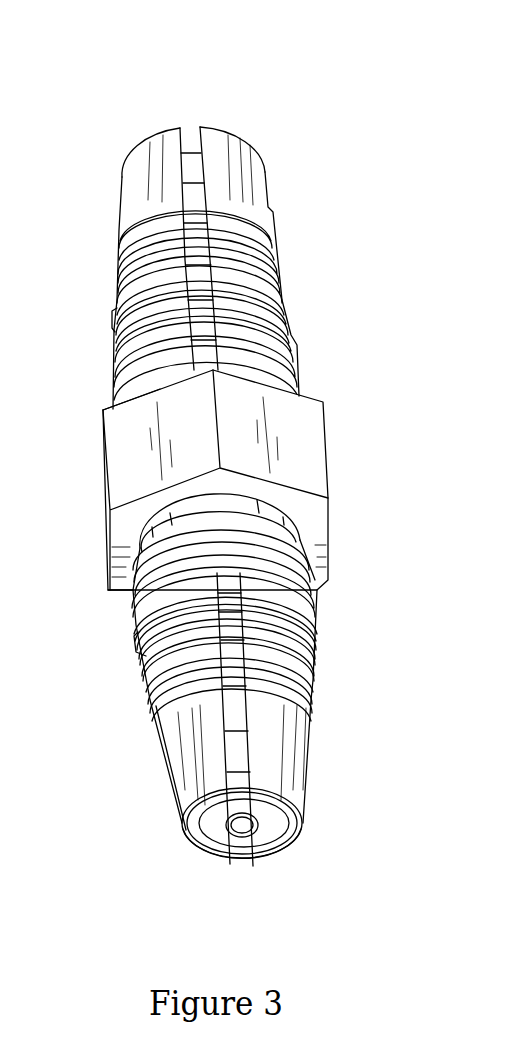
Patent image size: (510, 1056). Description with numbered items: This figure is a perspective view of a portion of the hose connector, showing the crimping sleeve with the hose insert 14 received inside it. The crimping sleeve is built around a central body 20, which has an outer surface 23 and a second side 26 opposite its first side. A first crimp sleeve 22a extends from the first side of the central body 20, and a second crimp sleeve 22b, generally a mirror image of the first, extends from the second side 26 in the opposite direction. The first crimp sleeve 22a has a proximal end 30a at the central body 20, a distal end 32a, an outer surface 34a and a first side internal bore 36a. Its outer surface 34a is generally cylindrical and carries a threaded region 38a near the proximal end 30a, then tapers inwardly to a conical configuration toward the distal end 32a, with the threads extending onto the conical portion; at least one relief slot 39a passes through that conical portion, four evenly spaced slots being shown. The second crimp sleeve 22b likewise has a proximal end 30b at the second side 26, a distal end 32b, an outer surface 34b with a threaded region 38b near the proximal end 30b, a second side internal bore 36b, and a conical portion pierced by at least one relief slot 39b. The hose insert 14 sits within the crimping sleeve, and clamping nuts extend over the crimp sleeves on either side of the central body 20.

The hose insert 14 is at (260, 806).
The central body 20 is at (201, 481).
The first crimp sleeve 22a is at (209, 225).
The second crimp sleeve 22b is at (256, 738).
The outer surface 23 is at (318, 428).
The second side 26 is at (323, 527).
The proximal end 30a is at (100, 406).
The proximal end 30b is at (108, 573).
The distal end 32a is at (244, 114).
The distal end 32b is at (158, 815).
The outer surface 34a is at (285, 285).
The outer surface 34b is at (158, 733).
The first side internal bore 36a is at (186, 112).
The second side internal bore 36b is at (268, 874).
The threaded region 38a is at (115, 320).
The threaded region 38b is at (140, 638).
The relief slot 39a is at (175, 172).
The relief slot 39b is at (257, 757).